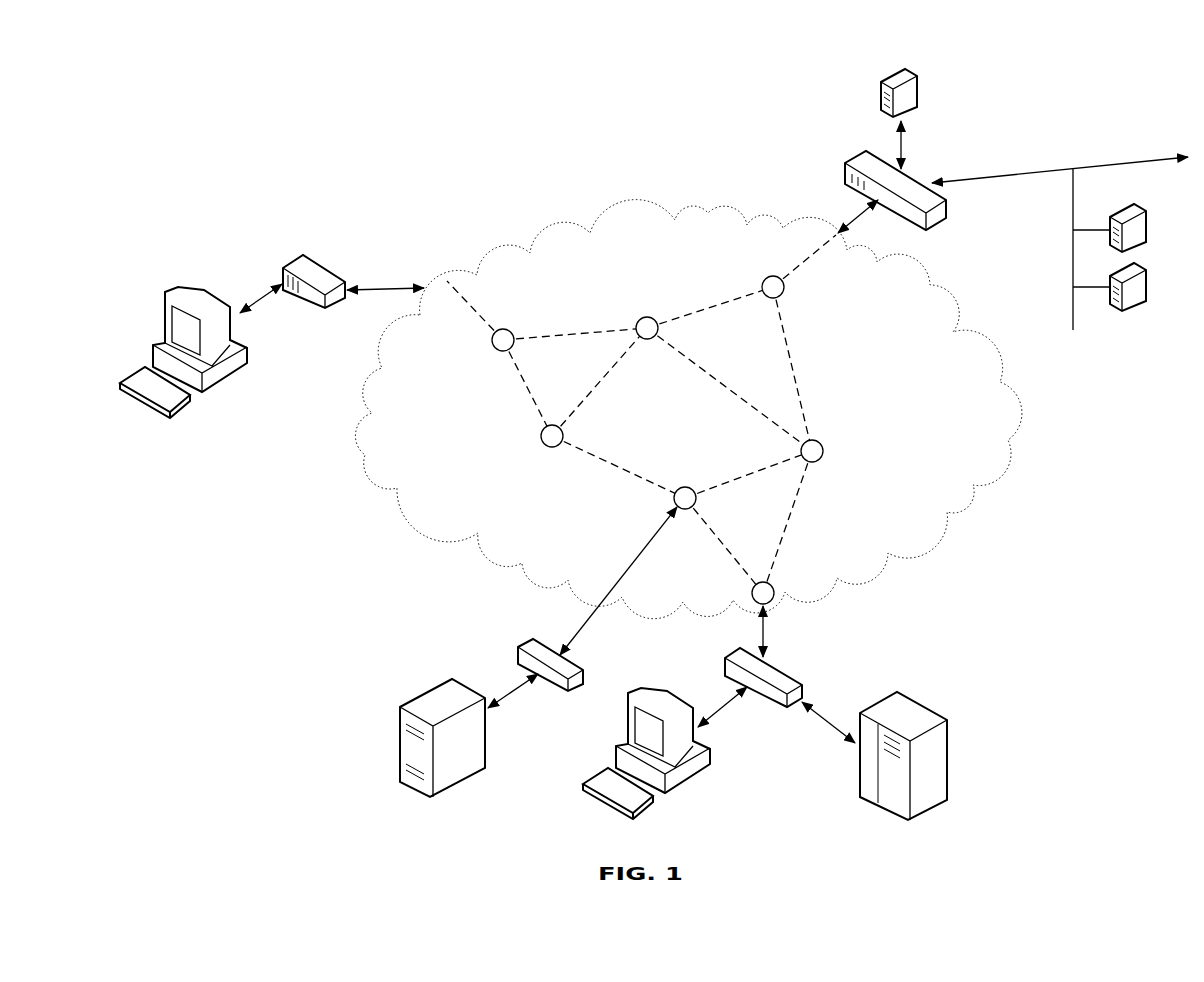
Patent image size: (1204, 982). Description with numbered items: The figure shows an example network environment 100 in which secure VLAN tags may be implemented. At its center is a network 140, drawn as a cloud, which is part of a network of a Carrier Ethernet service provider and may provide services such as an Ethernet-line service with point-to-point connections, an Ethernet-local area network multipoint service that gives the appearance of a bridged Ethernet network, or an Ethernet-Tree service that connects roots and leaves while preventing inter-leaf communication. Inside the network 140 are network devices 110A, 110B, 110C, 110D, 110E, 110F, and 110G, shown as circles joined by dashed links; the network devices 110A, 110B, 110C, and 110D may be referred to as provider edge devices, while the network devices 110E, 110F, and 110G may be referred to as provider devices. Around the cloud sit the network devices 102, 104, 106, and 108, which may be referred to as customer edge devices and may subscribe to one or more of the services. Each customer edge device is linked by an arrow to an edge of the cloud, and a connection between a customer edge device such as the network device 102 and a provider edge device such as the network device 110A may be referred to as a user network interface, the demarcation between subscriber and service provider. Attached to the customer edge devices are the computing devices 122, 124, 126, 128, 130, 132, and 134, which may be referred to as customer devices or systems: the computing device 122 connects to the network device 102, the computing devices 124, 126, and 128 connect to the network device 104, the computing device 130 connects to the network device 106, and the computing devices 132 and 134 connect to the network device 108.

The network environment 100 is at (274, 115).
The network device 102 is at (313, 258).
The network device 104 is at (947, 217).
The network device 106 is at (533, 640).
The network device 108 is at (785, 670).
The network device 110A is at (496, 348).
The network device 110B is at (671, 509).
The network device 110C is at (781, 297).
The network device 110D is at (753, 594).
The network device 110E is at (542, 446).
The network device 110F is at (642, 317).
The network device 110G is at (820, 462).
The computing device 122 is at (190, 292).
The computing device 124 is at (886, 73).
The computing device 126 is at (1156, 237).
The computing device 128 is at (1156, 296).
The computing device 130 is at (408, 790).
The computing device 132 is at (617, 754).
The computing device 134 is at (915, 703).
The network 140 is at (688, 409).